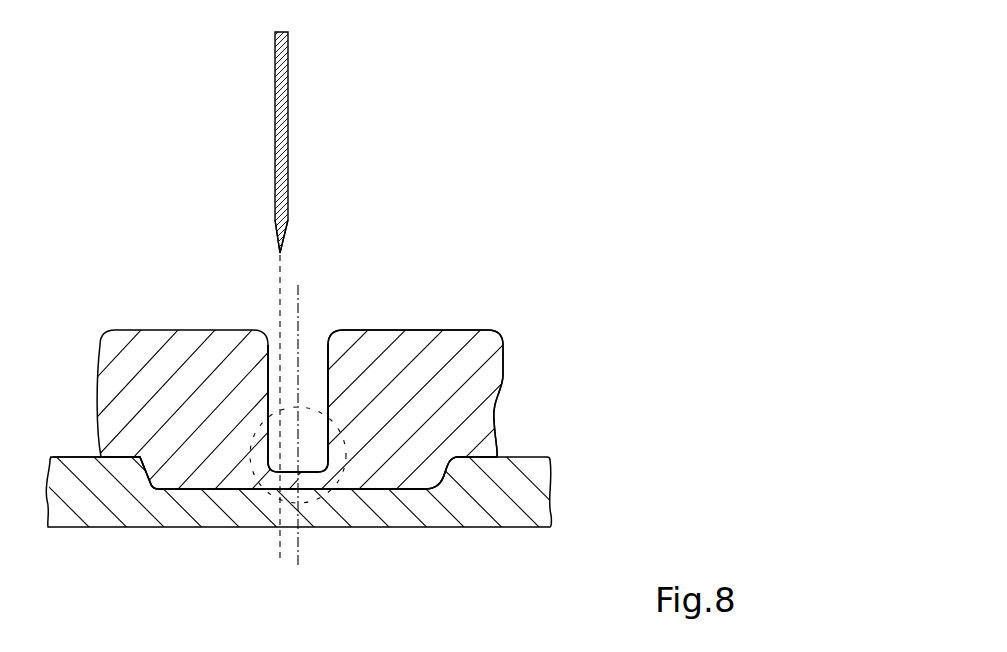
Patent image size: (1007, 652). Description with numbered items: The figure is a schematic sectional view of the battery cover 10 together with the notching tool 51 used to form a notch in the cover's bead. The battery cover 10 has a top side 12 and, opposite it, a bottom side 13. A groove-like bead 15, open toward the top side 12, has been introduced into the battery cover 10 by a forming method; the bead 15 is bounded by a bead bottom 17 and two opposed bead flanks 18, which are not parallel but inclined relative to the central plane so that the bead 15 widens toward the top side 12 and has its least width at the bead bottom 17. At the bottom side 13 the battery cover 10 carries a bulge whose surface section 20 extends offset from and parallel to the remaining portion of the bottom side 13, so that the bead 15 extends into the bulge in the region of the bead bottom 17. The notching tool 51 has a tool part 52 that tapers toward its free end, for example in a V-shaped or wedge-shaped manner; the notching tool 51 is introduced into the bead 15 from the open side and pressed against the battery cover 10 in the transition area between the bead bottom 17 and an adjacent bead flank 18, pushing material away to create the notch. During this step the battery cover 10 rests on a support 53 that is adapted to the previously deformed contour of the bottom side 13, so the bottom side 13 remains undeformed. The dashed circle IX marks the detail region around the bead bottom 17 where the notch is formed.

The notching tool 51 is at (285, 114).
The tool part 52 is at (284, 228).
The top side 12 is at (128, 327).
The battery cover 10 is at (483, 347).
The bead flanks 18 is at (272, 390).
The bead 15 is at (332, 319).
The bead bottom 17 is at (283, 474).
The surface section 20 is at (200, 491).
The bottom side 13 is at (105, 460).
The support 53 is at (470, 517).
The detail circle IX is at (350, 493).